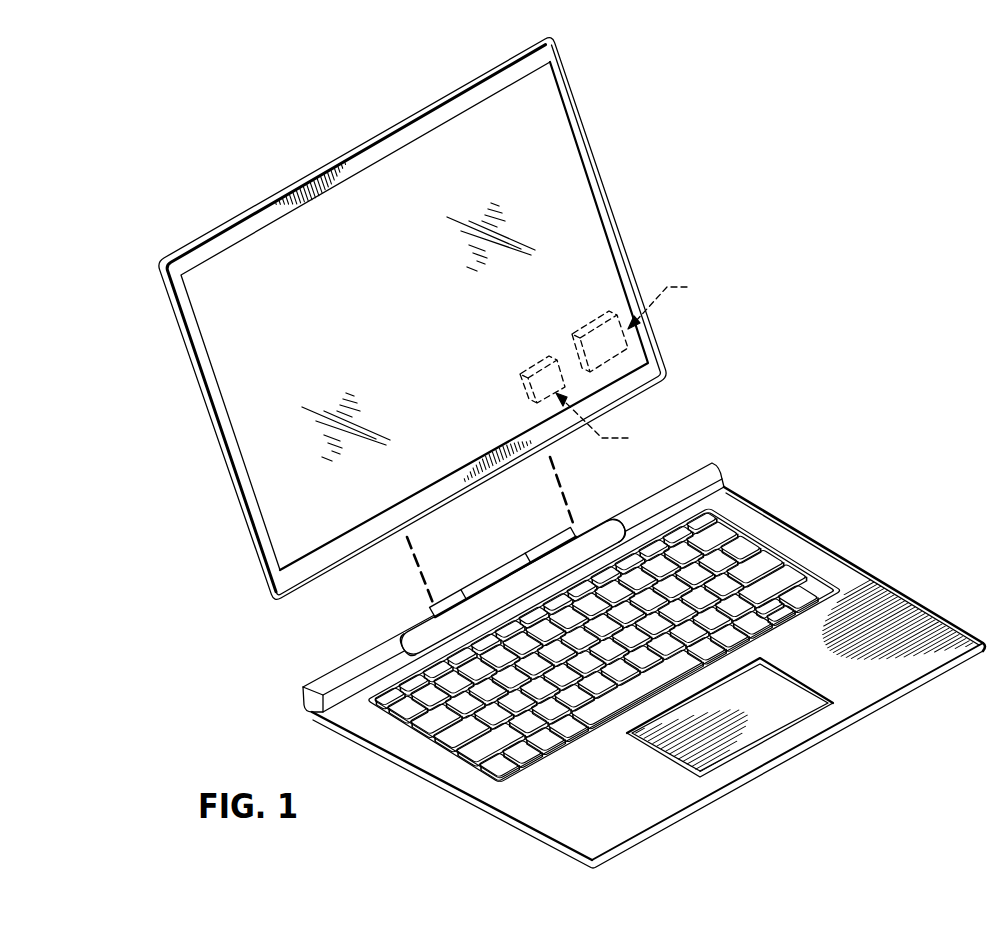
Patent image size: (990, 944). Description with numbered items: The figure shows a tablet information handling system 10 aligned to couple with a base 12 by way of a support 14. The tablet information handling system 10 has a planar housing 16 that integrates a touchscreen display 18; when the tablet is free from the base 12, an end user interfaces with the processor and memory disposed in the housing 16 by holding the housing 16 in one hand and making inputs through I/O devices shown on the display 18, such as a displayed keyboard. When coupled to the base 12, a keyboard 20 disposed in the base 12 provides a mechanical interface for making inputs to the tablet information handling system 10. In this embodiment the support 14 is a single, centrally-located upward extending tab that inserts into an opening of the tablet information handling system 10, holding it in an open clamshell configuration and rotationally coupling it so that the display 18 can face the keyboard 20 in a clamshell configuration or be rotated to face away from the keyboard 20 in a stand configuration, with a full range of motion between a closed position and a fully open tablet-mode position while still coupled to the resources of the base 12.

The tablet information handling system 10 is at (851, 270).
The base 12 is at (851, 567).
The support 14 is at (503, 563).
The planar housing 16 is at (349, 151).
The touchscreen display 18 is at (404, 333).
The keyboard 20 is at (751, 515).